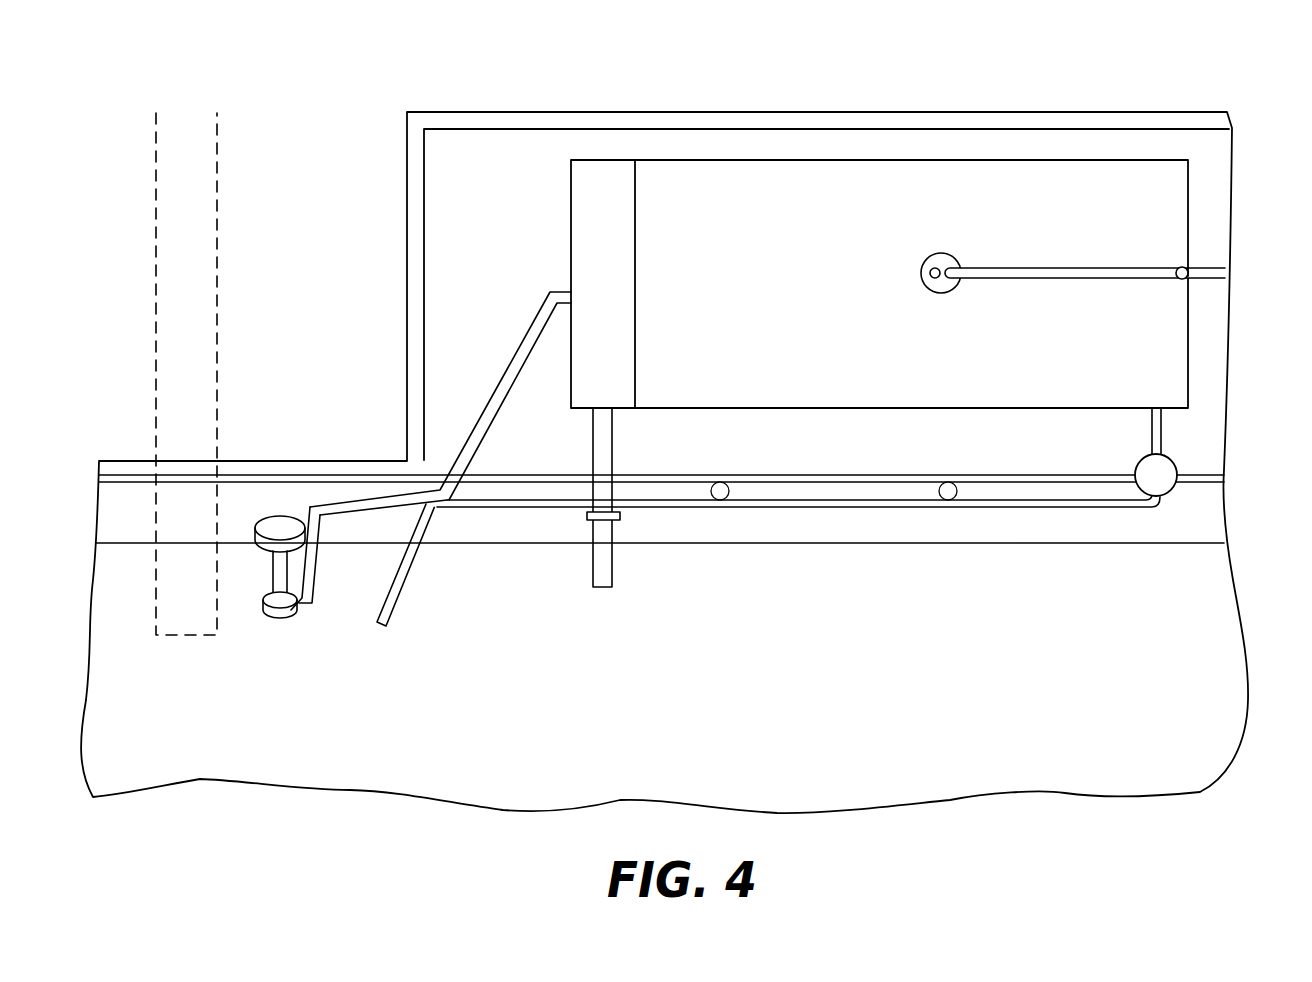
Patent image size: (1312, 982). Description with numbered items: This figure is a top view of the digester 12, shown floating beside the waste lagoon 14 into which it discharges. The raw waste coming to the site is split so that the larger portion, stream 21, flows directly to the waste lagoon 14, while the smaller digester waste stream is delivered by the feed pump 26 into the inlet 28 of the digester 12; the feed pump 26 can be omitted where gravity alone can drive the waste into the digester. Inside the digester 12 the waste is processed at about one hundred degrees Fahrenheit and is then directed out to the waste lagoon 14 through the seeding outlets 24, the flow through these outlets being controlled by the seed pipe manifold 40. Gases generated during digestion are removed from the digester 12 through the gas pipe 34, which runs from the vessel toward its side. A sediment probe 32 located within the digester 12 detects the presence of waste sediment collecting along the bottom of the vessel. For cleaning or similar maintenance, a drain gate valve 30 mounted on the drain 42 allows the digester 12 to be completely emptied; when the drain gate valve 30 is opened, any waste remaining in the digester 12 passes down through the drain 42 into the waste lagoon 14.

The digester 12 is at (1200, 58).
The waste lagoon 14 is at (780, 699).
The stream 21 is at (198, 303).
The seeding outlets 24 is at (393, 575).
The feed pump 26 is at (282, 523).
The inlet 28 is at (340, 503).
The drain gate valve 30 is at (587, 516).
The sediment probe 32 is at (936, 268).
The gas pipe 34 is at (1087, 268).
The seed pipe manifold 40 is at (1165, 486).
The drain 42 is at (612, 575).